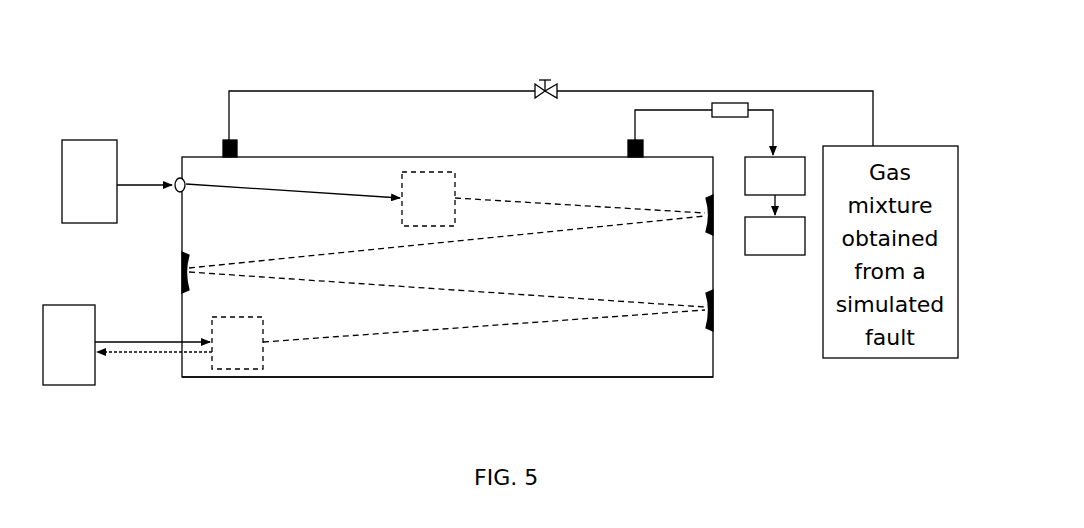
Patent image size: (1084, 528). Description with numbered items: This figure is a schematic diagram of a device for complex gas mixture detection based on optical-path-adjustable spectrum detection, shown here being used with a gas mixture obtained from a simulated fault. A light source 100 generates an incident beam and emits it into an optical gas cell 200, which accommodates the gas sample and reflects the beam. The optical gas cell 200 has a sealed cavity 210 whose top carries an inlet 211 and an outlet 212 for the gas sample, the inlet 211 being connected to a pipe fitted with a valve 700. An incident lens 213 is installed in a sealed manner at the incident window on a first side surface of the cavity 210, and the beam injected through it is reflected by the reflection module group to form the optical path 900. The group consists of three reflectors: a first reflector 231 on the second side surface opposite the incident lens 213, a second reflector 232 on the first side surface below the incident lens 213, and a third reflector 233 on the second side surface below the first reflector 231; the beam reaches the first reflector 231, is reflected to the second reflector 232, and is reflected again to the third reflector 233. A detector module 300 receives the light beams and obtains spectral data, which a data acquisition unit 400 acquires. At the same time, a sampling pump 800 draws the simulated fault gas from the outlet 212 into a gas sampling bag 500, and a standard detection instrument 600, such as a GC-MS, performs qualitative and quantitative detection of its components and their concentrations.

The light source 100 is at (117, 181).
The optical gas cell 200 is at (447, 267).
The cavity 210 is at (393, 378).
The inlet 211 is at (225, 138).
The outlet 212 is at (626, 140).
The incident lens 213 is at (174, 178).
The first reflector 231 is at (714, 215).
The second reflector 232 is at (181, 262).
The third reflector 233 is at (714, 318).
The detector module 300 is at (333, 270).
The data acquisition unit 400 is at (127, 345).
The gas sampling bag 500 is at (775, 176).
The standard detection instrument 600 is at (775, 225).
The valve 700 is at (537, 83).
The sampling pump 800 is at (727, 100).
The optical path 900 is at (673, 218).